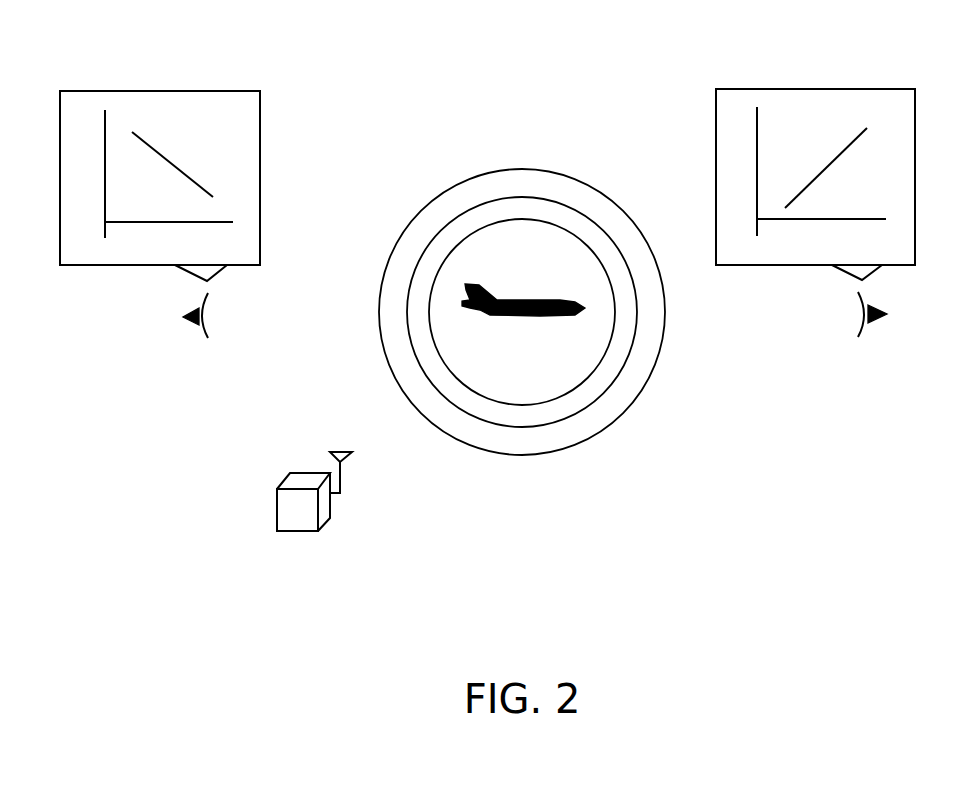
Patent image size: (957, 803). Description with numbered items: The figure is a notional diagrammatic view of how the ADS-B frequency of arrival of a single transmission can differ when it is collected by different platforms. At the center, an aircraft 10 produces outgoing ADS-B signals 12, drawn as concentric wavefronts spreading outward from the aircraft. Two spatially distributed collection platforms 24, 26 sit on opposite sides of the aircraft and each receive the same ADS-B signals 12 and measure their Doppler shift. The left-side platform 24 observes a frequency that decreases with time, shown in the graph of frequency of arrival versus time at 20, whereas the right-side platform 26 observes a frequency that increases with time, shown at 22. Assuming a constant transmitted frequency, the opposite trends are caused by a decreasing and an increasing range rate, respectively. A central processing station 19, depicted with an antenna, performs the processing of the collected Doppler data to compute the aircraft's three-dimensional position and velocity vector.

The aircraft 10 is at (535, 316).
The outgoing ADS-B signals 12 is at (431, 182).
The central processing station 19 is at (283, 515).
The decreasing frequency with time 20 is at (168, 80).
The increasing frequency with time 22 is at (817, 79).
The collection platform 24 is at (160, 345).
The collection platform 26 is at (846, 356).